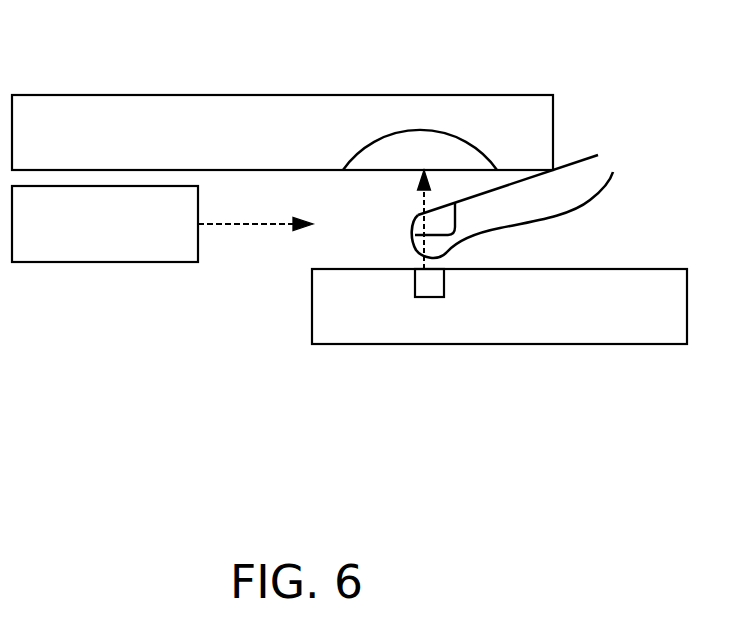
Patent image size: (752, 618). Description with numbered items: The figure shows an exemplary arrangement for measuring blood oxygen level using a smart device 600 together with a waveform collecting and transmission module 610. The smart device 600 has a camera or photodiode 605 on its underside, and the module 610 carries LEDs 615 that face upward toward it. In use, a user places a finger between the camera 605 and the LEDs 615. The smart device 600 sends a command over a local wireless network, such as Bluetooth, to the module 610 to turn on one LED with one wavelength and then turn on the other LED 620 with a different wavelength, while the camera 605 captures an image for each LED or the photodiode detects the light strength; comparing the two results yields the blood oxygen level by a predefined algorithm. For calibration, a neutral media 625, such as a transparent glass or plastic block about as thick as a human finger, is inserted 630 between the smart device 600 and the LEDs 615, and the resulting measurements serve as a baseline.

The smart device 600 is at (94, 77).
The camera or photodiode 605 is at (390, 114).
The waveform collecting and transmission module 610 is at (341, 352).
The LEDs 615 is at (456, 313).
The other LED 620 is at (441, 249).
The neutral media 625 is at (120, 276).
The insertion 630 is at (255, 243).